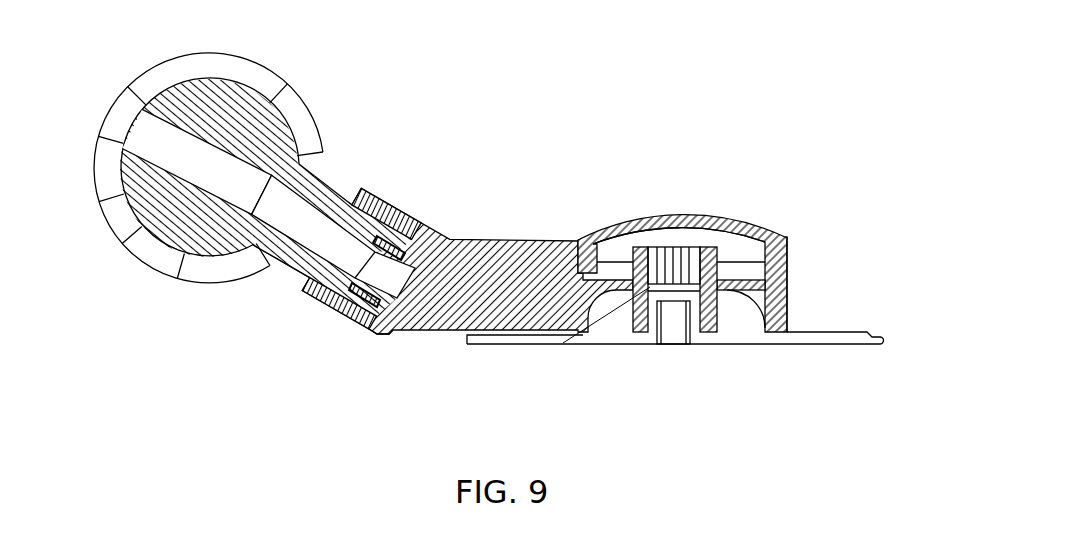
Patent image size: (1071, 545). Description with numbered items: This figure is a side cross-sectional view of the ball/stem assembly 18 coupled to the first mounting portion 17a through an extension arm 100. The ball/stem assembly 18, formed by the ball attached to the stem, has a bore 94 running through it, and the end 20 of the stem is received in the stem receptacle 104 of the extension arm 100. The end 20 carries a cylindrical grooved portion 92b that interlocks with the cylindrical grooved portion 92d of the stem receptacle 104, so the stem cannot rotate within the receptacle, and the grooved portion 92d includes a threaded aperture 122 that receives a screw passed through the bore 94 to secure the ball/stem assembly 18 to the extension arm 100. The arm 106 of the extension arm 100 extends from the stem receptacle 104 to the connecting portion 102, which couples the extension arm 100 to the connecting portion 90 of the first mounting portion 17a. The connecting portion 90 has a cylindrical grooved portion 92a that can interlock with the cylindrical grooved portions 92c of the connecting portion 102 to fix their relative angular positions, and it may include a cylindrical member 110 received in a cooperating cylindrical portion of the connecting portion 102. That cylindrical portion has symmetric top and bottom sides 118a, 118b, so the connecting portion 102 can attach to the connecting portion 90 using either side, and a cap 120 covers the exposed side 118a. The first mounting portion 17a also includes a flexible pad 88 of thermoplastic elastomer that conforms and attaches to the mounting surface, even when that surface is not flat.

The ball/stem assembly 18 is at (298, 160).
The bore 94 is at (190, 150).
The end 20 is at (343, 282).
The cylindrical grooved portion 92b is at (392, 228).
The cylindrical grooved portion 92d is at (400, 236).
The stem receptacle 104 is at (365, 332).
The arm 106 is at (527, 241).
The threaded aperture 122 is at (443, 292).
The extension arm 100 is at (498, 320).
The first mounting portion 17a is at (642, 166).
The cap 120 is at (688, 216).
The connecting portion 102 is at (787, 270).
The top side 118a is at (787, 248).
The bottom side 118b is at (787, 307).
The cylindrical member 110 is at (738, 315).
The cylindrical grooved portion 92a is at (635, 327).
The cylindrical grooved portions 92c is at (707, 260).
The connecting portion 90 is at (696, 371).
The flexible pad 88 is at (845, 333).